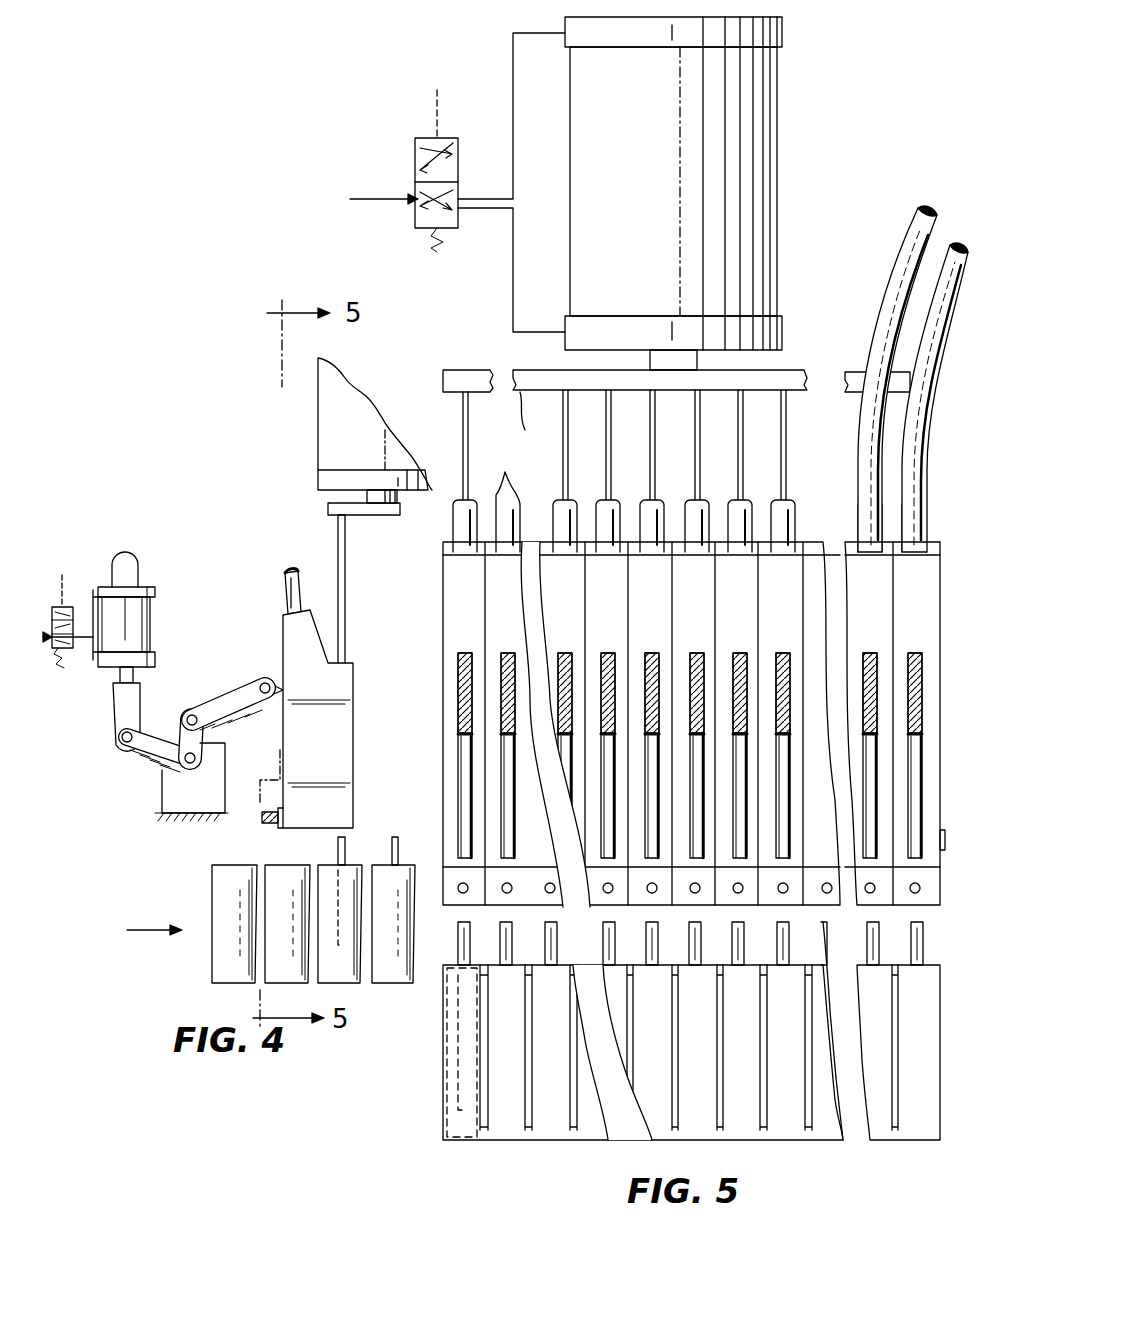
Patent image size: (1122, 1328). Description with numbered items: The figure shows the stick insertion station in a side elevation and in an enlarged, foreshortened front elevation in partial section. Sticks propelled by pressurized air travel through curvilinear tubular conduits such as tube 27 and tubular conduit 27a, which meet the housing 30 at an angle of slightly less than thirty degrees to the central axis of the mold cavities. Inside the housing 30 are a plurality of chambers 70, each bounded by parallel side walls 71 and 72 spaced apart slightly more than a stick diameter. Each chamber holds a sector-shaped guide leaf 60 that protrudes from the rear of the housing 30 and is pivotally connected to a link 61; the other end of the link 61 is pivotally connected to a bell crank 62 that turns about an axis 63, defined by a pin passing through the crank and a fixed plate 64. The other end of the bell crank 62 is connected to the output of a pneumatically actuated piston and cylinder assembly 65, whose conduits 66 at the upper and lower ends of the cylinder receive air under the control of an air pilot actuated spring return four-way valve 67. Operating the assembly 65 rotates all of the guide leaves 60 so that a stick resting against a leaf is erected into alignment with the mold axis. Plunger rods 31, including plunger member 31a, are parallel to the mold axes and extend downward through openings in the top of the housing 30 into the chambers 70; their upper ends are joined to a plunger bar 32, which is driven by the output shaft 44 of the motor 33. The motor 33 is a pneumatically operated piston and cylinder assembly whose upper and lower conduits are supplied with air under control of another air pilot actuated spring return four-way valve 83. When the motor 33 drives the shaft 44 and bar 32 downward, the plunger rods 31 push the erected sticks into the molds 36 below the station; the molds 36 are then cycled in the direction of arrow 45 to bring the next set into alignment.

In FIG. 5, the tube 27 is at (886, 270).
In FIG. 4, the tubular conduit 27a is at (286, 596).
In FIG. 4, the housing 30 is at (353, 735).
In FIG. 5, the housing 30 is at (443, 632).
In FIG. 5, the plunger rods 31 is at (568, 434).
In FIG. 4, the plunger member 31a is at (345, 587).
In FIG. 4, the plunger bar 32 is at (328, 512).
In FIG. 5, the plunger bar 32 is at (467, 370).
In FIG. 4, the motor 33 is at (318, 405).
In FIG. 5, the motor 33 is at (782, 118).
In FIG. 4, the molds 36 is at (347, 983).
In FIG. 5, the molds 36 is at (443, 1078).
In FIG. 4, the output shaft 44 is at (367, 498).
In FIG. 4, the arrow 45 is at (143, 930).
In FIG. 4, the guide leaf 60 is at (278, 727).
In FIG. 5, the guide leaf 60 is at (657, 734).
In FIG. 4, the link 61 is at (242, 683).
In FIG. 4, the bell crank 62 is at (142, 762).
In FIG. 4, the axis 63 is at (182, 768).
In FIG. 4, the fixed plate 64 is at (215, 815).
In FIG. 4, the piston and cylinder assembly 65 is at (158, 622).
In FIG. 4, the conduits 66 is at (80, 662).
In FIG. 4, the four-way valve 67 is at (70, 605).
In FIG. 5, the chambers 70 is at (663, 737).
In FIG. 5, the side wall 71 is at (663, 755).
In FIG. 5, the side wall 72 is at (468, 832).
In FIG. 5, the four-way valve 83 is at (410, 148).